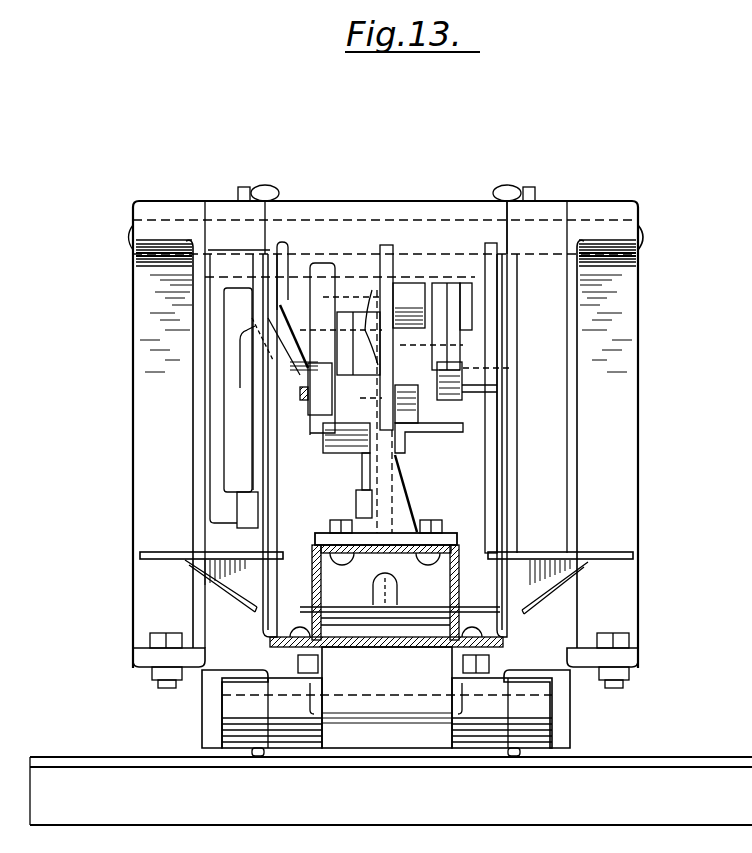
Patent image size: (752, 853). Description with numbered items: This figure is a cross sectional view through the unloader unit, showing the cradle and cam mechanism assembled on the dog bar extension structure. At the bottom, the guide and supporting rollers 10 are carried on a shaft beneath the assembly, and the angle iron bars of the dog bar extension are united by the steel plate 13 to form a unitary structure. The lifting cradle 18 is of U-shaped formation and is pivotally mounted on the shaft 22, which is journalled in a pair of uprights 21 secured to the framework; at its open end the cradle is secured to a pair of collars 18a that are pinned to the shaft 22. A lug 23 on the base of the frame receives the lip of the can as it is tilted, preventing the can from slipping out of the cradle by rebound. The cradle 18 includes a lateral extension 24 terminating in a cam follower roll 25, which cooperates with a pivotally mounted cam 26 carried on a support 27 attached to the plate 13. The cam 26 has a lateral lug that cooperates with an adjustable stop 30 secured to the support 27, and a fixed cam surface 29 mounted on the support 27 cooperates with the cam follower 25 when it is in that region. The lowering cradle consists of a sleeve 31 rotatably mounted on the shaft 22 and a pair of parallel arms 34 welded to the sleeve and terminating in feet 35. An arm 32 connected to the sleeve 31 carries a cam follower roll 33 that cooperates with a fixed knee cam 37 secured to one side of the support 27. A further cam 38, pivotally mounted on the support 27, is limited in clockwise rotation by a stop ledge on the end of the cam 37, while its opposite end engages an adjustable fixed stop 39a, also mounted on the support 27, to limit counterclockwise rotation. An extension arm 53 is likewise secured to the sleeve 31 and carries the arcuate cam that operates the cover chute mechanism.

The guide and supporting rollers 10 is at (258, 742).
The steel plate 13 is at (368, 556).
The lifting cradle 18 is at (265, 186).
The collars 18a is at (230, 200).
The uprights 21 is at (133, 368).
The shaft 22 is at (646, 237).
The lug 23 is at (398, 586).
The lateral extension 24 is at (285, 358).
The cam follower roll 25 is at (318, 415).
The cam 26 is at (330, 272).
The support 27 is at (390, 501).
The fixed cam surface 29 is at (372, 300).
The adjustable stop 30 is at (352, 447).
The sleeve 31 is at (399, 203).
The arm 32 is at (492, 302).
The cam follower roll 33 is at (460, 425).
The parallel arms 34 is at (272, 486).
The feet 35 is at (133, 558).
The fixed knee cam 37 is at (452, 433).
The cam 38 is at (455, 283).
The adjustable fixed stop 39a is at (412, 418).
The extension arm 53 is at (215, 325).